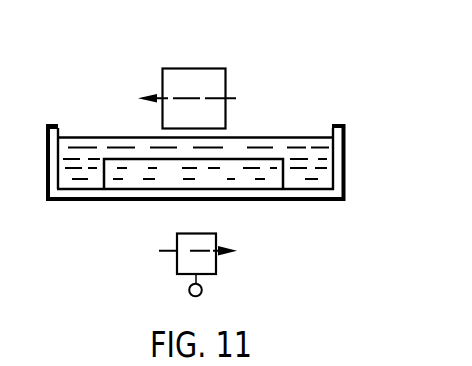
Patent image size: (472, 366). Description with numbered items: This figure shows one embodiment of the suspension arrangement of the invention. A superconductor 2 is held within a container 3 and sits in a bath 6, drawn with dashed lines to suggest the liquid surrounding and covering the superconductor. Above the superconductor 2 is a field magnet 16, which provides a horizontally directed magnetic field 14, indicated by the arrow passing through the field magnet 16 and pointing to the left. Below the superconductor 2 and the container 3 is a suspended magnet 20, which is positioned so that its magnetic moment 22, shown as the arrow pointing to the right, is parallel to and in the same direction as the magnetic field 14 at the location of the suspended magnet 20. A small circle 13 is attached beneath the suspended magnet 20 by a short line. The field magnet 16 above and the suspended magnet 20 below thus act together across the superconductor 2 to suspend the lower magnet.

The superconductor 2 is at (283, 178).
The tank 3 is at (345, 156).
The liquid bath 6 is at (84, 137).
The pivot 13 is at (202, 290).
The magnetic field 14 is at (230, 100).
The field magnet 16 is at (194, 68).
The suspended magnet 20 is at (177, 259).
The magnetic moment 22 is at (238, 247).